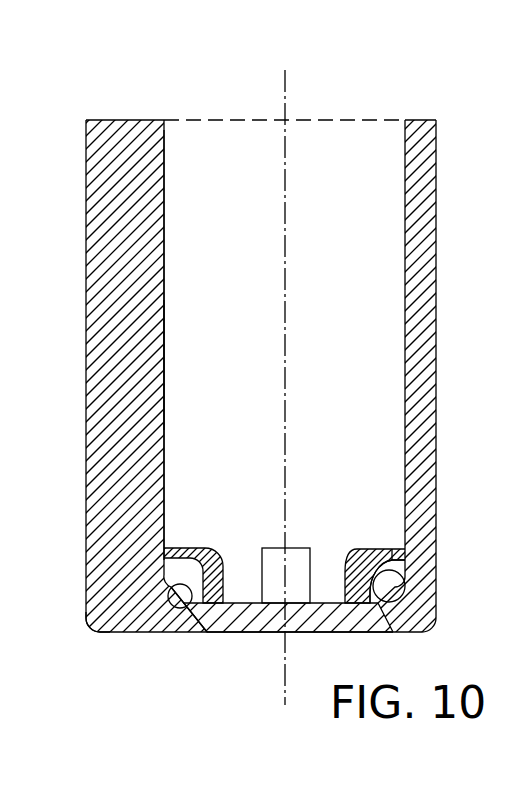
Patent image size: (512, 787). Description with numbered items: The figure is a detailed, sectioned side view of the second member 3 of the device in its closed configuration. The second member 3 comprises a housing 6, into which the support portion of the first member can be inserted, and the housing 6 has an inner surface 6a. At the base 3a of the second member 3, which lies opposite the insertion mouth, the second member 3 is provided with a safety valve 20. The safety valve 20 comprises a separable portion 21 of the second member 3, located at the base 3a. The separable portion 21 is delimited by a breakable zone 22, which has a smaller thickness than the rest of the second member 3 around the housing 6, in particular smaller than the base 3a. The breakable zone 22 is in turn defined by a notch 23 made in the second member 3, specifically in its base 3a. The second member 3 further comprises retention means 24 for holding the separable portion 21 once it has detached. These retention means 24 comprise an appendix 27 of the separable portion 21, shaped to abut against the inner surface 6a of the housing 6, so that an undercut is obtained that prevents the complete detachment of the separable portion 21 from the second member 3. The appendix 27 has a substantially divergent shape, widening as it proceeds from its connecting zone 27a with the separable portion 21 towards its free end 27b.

The second member 3 is at (78, 204).
The base 3a is at (102, 633).
The housing 6 is at (172, 188).
The inner surface 6a is at (172, 365).
The safety valve 20 is at (232, 676).
The separable portion 21 is at (257, 620).
The breakable zone 22 is at (178, 600).
The notch 23 is at (201, 641).
The retention means 24 is at (186, 537).
The appendix 27 is at (272, 548).
The connecting zone 27a is at (380, 583).
The free end 27b is at (402, 553).